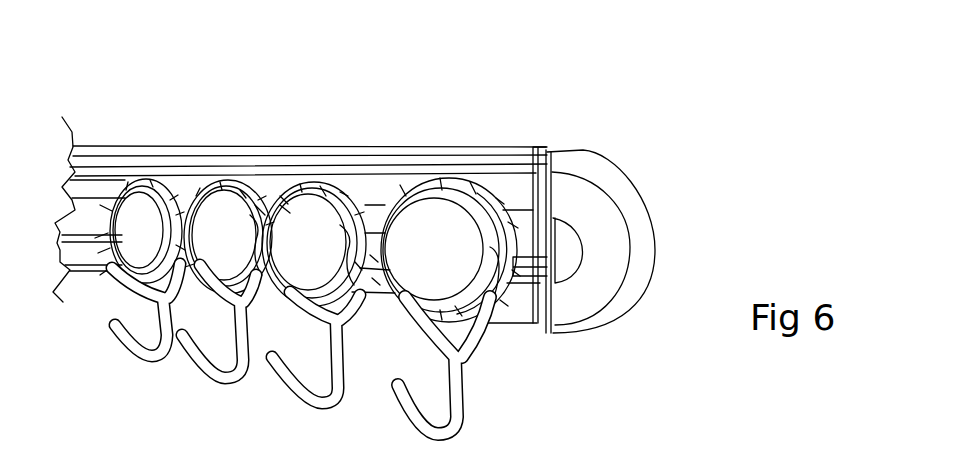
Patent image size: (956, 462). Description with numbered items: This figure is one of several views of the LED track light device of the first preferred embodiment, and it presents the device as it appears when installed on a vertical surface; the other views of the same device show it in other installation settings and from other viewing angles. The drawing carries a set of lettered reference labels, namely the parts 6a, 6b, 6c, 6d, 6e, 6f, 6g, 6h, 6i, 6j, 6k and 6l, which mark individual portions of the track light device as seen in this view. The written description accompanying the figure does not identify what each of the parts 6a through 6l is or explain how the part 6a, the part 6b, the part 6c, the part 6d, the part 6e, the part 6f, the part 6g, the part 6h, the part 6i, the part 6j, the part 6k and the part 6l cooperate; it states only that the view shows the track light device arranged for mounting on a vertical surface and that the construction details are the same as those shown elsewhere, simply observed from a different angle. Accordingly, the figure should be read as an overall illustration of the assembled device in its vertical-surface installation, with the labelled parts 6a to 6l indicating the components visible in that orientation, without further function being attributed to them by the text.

The rail 6a is at (367, 155).
The end cap 6b is at (605, 175).
The connector 6c is at (552, 215).
The end plate 6d is at (530, 262).
The ring 6e is at (462, 185).
The ring 6f is at (300, 183).
The ring 6g is at (219, 183).
The ring 6h is at (138, 182).
The hook 6i is at (467, 360).
The hook 6j is at (347, 338).
The hook 6k is at (253, 320).
The hook 6l is at (177, 302).